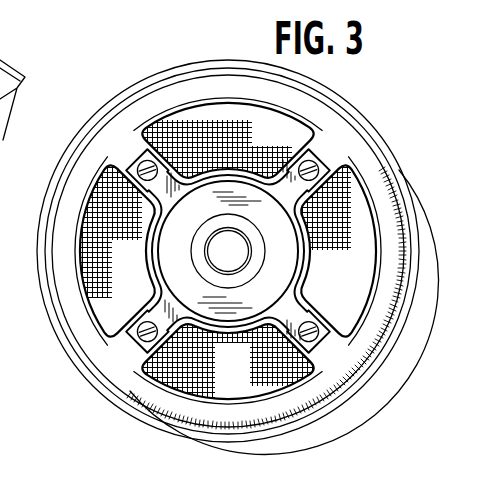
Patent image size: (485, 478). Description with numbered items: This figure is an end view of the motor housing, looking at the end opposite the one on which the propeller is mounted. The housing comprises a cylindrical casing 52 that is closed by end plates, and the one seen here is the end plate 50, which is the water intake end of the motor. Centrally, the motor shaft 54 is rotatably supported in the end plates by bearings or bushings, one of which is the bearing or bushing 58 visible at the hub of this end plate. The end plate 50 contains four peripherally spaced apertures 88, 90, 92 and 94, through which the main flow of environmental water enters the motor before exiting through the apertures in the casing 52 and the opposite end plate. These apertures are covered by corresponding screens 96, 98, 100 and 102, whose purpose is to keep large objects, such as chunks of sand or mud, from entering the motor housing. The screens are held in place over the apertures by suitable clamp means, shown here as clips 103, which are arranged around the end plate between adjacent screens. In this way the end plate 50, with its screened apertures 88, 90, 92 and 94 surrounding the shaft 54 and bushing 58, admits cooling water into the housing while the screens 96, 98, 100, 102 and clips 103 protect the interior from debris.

The end plate 50 is at (227, 82).
The cylindrical casing 52 is at (167, 73).
The motor shaft 54 is at (237, 260).
The bearing or bushing 58 is at (258, 260).
The aperture 88 is at (288, 132).
The aperture 90 is at (383, 334).
The aperture 92 is at (257, 388).
The aperture 94 is at (105, 298).
The screen 96 is at (239, 150).
The screen 98 is at (340, 259).
The screen 100 is at (236, 371).
The screen 102 is at (136, 255).
The clip 103 is at (141, 158).